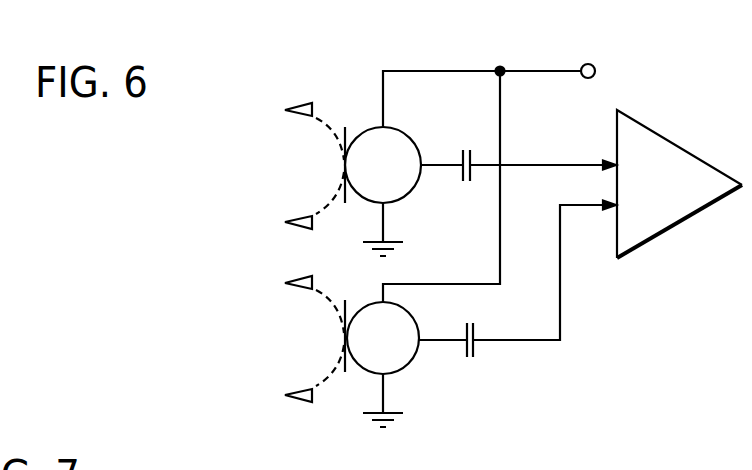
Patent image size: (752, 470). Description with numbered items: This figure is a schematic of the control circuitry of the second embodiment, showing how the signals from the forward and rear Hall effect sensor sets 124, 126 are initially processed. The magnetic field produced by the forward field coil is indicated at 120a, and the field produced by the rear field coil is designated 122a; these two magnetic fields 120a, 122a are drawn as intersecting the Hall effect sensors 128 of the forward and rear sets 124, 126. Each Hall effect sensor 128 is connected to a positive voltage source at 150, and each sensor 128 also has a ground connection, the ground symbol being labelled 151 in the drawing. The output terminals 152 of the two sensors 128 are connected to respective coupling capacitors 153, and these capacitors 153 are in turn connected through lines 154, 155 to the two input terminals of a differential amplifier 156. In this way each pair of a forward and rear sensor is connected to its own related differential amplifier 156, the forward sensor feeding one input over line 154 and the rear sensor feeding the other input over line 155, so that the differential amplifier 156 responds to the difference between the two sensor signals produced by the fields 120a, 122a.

The forward field coil magnetic field 120a is at (325, 122).
The rear field coil magnetic field 122a is at (330, 302).
The forward Hall effect sensor set 124 is at (372, 128).
The rear Hall effect sensor set 126 is at (358, 370).
The Hall effect sensor 128 is at (366, 134).
The positive voltage source 150 is at (590, 62).
The ground connection 151 is at (383, 227).
The output terminal 152 is at (440, 163).
The coupling capacitor 153 is at (474, 177).
The line 154 is at (520, 165).
The line 155 is at (560, 288).
The differential amplifier 156 is at (655, 222).